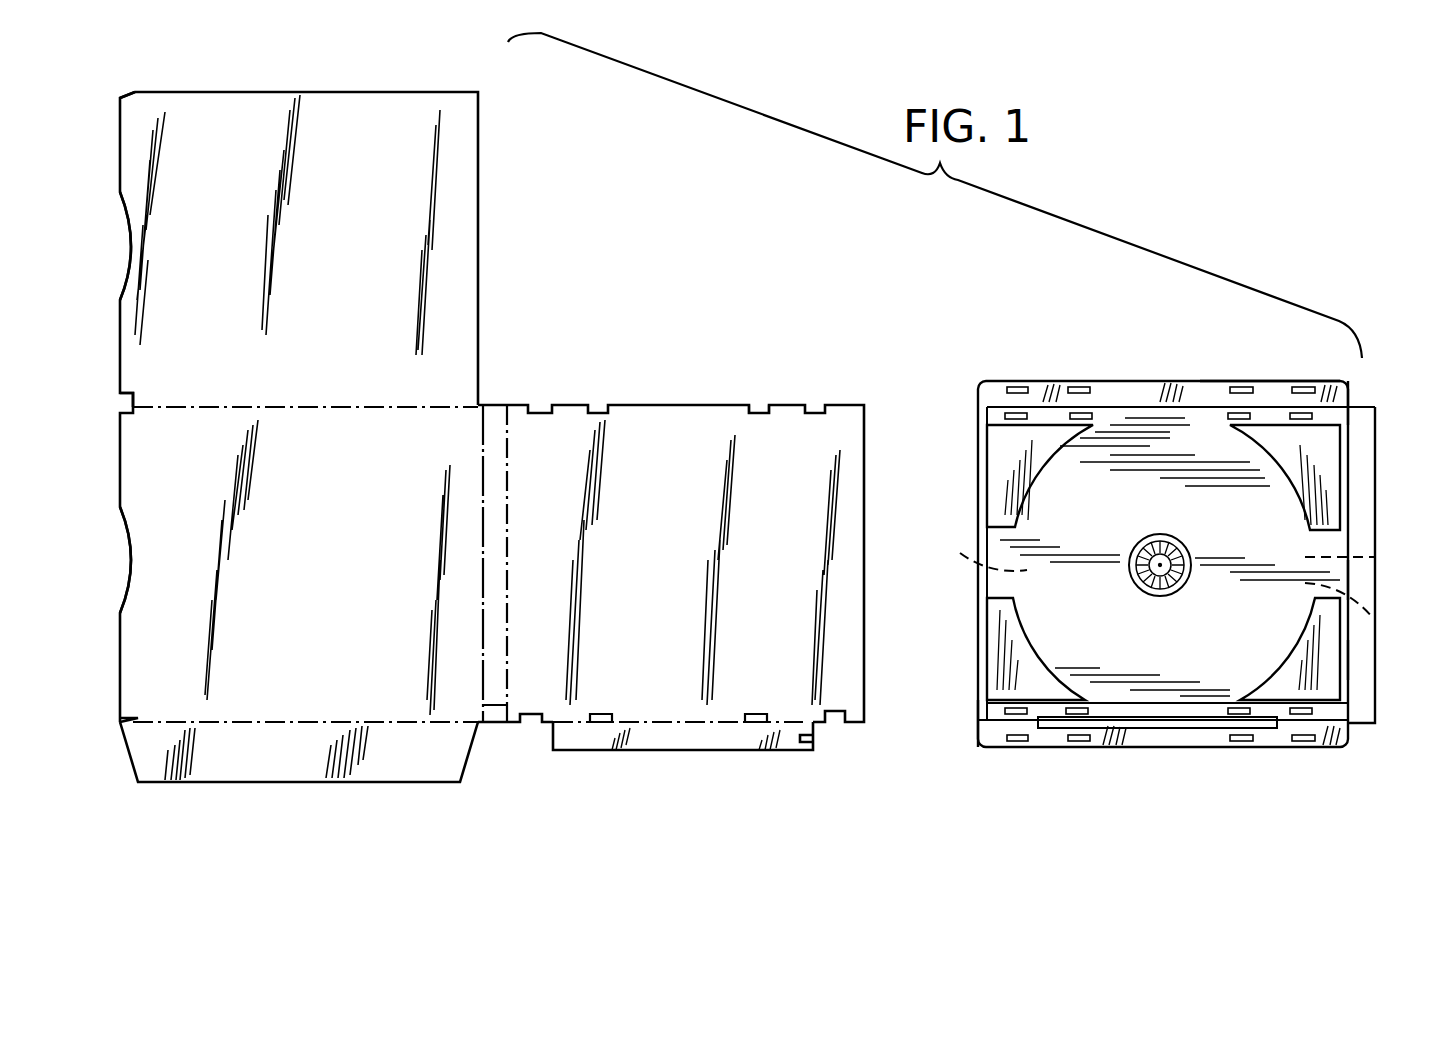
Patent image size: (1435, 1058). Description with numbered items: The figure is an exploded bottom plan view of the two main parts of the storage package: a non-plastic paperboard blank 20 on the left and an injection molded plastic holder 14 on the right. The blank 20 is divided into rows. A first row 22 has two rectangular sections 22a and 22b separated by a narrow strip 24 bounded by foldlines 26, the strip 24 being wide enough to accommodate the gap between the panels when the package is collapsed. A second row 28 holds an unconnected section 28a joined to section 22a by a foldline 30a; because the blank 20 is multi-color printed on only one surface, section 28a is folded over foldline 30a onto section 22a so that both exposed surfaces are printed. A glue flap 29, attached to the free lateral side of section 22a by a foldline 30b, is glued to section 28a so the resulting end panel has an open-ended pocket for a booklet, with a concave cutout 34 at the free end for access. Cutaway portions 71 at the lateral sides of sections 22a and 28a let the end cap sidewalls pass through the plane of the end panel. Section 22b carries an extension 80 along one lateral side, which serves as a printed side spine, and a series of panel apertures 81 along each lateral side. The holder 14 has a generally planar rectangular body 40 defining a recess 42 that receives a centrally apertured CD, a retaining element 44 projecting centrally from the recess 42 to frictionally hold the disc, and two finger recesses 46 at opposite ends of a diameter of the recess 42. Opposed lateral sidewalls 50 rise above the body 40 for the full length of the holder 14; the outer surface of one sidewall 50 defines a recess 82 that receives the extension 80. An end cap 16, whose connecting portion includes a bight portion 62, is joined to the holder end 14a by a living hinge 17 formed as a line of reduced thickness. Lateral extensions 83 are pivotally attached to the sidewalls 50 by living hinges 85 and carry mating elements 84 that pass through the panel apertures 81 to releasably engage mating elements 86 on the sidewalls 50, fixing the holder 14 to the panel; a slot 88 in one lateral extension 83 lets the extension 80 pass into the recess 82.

The holder 14 is at (1375, 766).
The holder end 14a is at (1340, 465).
The end cap 16 is at (1349, 579).
The living hinge 17 is at (1348, 425).
The blank 20 is at (865, 800).
The first row 22 is at (108, 407).
The section 22a is at (387, 527).
The section 22b is at (612, 582).
The strip 24 is at (495, 703).
The foldlines 26 is at (483, 648).
The second row 28 is at (108, 95).
The section 28a is at (380, 200).
The glue flap 29 is at (281, 765).
The foldline 30a is at (312, 408).
The foldline 30b is at (340, 722).
The concave cutout 34 is at (132, 240).
The holder body 40 is at (1008, 476).
The recess 42 is at (1363, 555).
The retaining element 44 is at (1157, 596).
The finger recesses 46 is at (1165, 593).
The lateral sidewalls 50 is at (1143, 407).
The bight portion 62 is at (1355, 660).
The cutaway portions 71 is at (135, 92).
The extension 80 is at (813, 738).
The panel apertures 81 is at (757, 408).
The recess 82 is at (1295, 722).
The lateral extensions 83 is at (1212, 392).
The mating elements 84 is at (1078, 386).
The living hinge 85 is at (1118, 405).
The mating elements 86 is at (1070, 416).
The slot 88 is at (1092, 726).